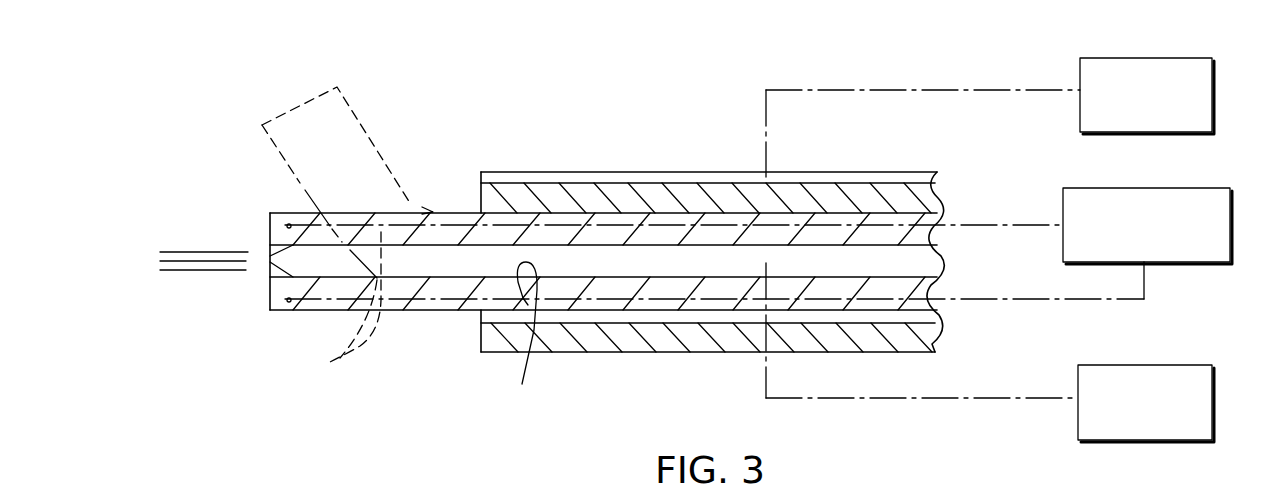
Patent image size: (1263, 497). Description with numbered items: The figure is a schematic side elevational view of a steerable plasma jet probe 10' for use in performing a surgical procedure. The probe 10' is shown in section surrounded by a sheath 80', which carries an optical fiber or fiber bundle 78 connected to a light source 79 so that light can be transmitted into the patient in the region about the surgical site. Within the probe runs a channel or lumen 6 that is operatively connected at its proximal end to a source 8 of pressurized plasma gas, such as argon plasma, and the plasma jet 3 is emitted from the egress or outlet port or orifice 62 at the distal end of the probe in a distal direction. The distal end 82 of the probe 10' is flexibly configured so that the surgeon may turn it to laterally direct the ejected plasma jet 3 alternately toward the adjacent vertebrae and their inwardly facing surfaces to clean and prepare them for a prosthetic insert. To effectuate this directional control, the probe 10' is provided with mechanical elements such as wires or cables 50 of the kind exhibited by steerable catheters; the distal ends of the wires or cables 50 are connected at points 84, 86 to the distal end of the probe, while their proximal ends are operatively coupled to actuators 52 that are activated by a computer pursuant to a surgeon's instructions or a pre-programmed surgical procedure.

The plasma jet 3 is at (207, 250).
The channel or lumen 6 is at (524, 337).
The source of plasma 8 is at (1090, 365).
The plasma jet probe 10' is at (607, 237).
The wires or cables 50 is at (338, 304).
The actuators 52 is at (1118, 188).
The distal end port 62 is at (270, 262).
The optical fiber or fiber bundle 78 is at (667, 172).
The light source 79 is at (1133, 58).
The sheath 80' is at (708, 366).
The flexibly configured distal end 82 is at (296, 214).
The connection point of wire or cable 84 is at (287, 225).
The connection point of wire or cable 86 is at (287, 302).